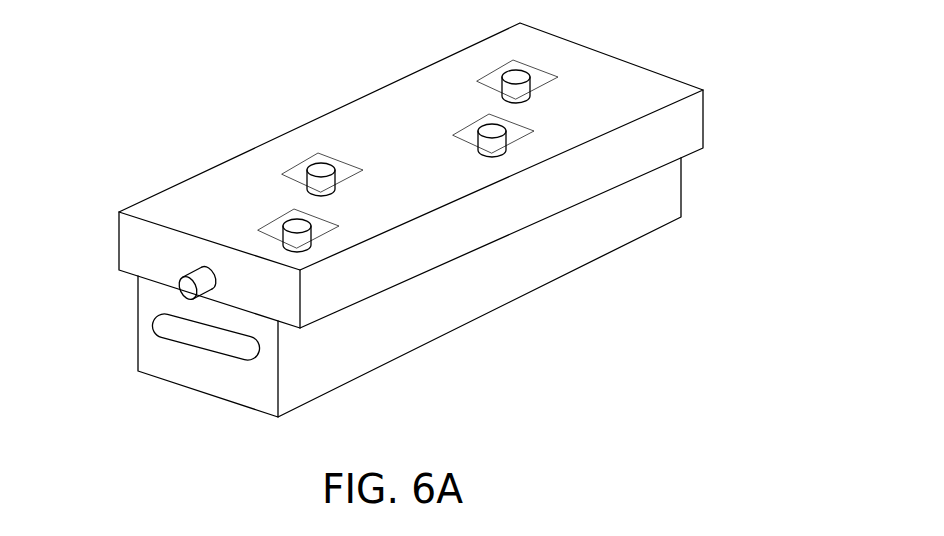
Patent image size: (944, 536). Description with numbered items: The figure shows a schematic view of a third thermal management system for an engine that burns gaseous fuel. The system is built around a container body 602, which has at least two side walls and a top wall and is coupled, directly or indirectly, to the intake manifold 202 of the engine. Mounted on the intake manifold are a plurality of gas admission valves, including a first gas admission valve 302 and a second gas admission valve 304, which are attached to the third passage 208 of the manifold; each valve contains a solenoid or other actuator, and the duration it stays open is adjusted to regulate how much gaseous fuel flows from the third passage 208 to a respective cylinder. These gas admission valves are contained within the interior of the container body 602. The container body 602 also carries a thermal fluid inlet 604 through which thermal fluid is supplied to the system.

The container body 602 is at (687, 123).
The intake manifold 202 is at (670, 213).
The third passage 208 is at (193, 344).
The thermal fluid inlet 604 is at (184, 286).
The second gas admission valve 304 is at (311, 188).
The first gas admission valve 302 is at (298, 238).